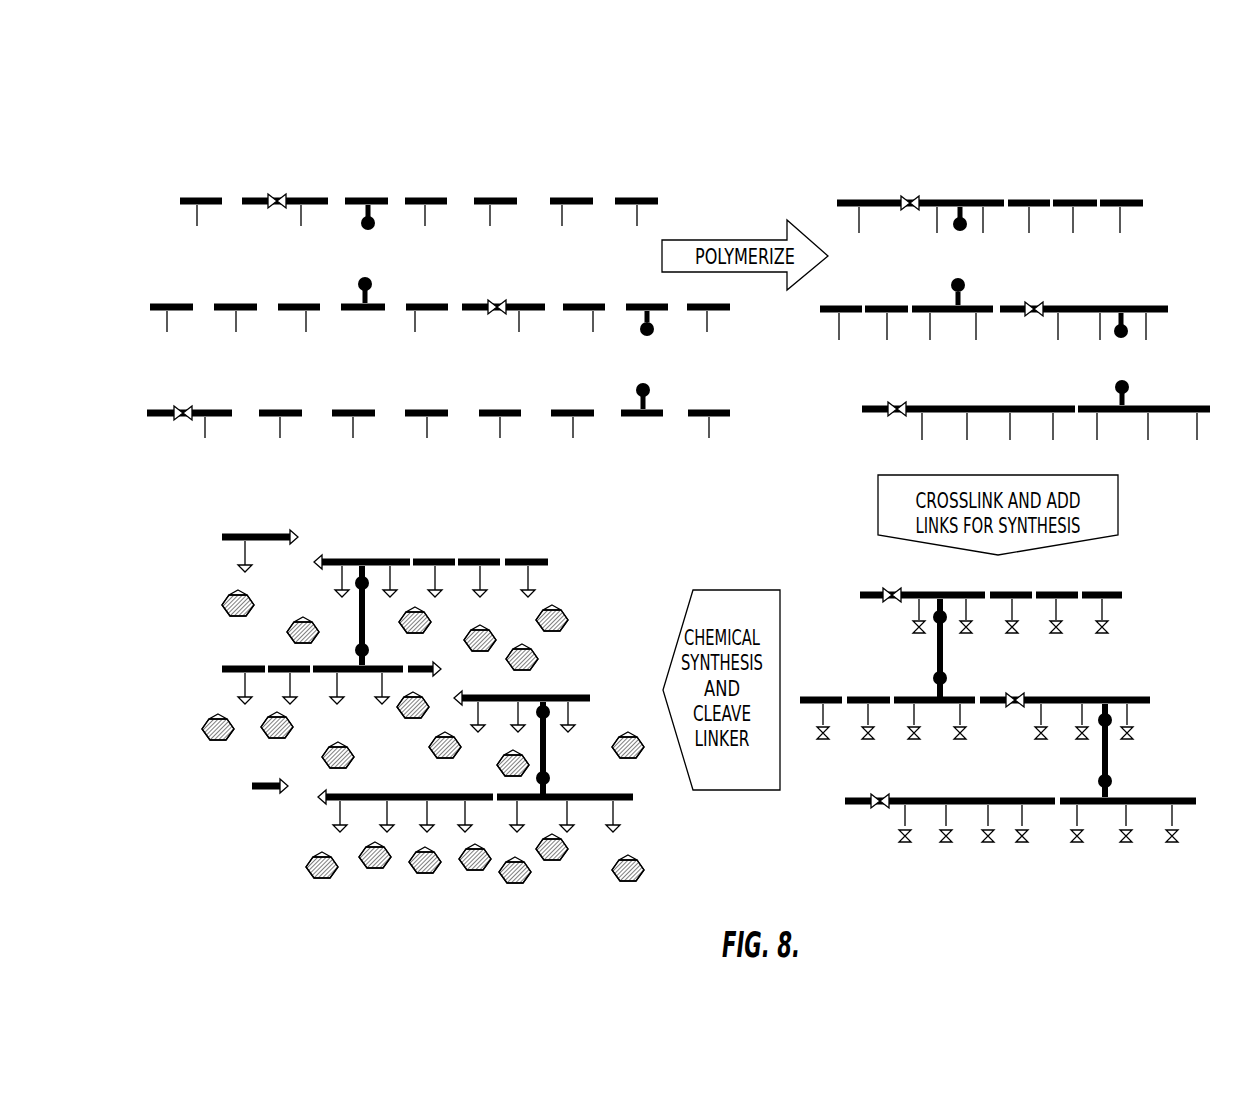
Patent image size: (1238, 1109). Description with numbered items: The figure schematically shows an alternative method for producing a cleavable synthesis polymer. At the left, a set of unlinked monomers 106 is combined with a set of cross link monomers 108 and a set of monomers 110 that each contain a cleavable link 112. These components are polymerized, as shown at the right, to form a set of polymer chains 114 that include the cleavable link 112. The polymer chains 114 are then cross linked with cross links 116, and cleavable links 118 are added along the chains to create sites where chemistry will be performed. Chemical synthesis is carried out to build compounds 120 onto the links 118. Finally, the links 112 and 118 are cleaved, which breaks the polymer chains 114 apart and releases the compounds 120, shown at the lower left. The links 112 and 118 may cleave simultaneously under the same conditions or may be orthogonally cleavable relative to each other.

The unlinked monomers 106 is at (497, 198).
The cross link monomers 108 is at (365, 311).
The monomers containing a cleavable link 110 is at (268, 204).
The cleavable link 112 is at (277, 195).
The polymer chains 114 is at (1077, 197).
The cross links 116 is at (944, 632).
The cleavable links 118 is at (1112, 627).
The compounds 120 is at (630, 752).